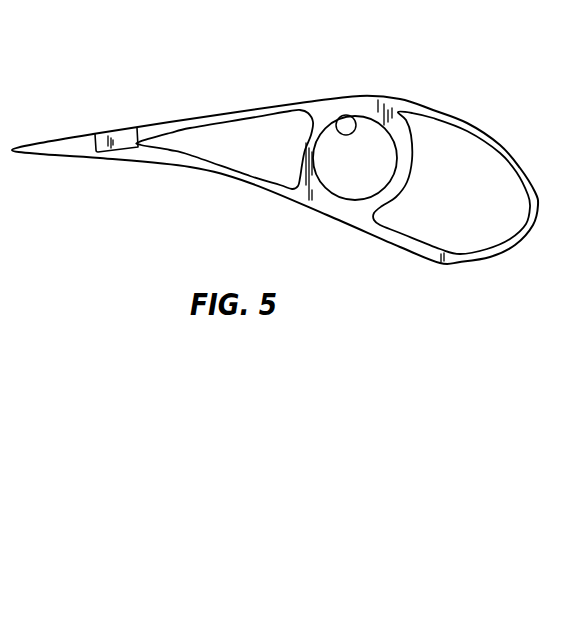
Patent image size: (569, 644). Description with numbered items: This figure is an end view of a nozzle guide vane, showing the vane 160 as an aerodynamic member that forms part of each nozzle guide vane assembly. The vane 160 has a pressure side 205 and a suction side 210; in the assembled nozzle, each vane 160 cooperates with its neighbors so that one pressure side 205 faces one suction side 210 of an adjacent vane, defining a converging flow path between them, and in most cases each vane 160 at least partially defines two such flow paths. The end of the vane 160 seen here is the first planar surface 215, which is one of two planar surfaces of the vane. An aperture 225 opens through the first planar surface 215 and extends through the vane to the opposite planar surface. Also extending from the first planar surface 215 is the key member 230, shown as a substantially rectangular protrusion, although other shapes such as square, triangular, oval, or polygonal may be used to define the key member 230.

The vane 160 is at (500, 105).
The pressure side 205 is at (327, 215).
The suction side 210 is at (398, 96).
The first planar surface 215 is at (530, 213).
The aperture 225 is at (336, 118).
The key member 230 is at (124, 138).